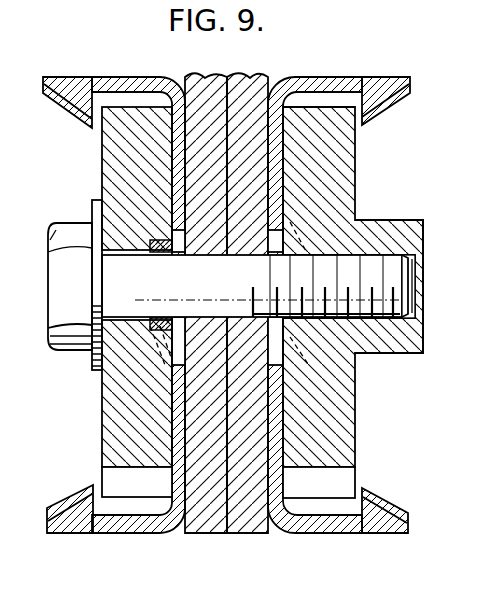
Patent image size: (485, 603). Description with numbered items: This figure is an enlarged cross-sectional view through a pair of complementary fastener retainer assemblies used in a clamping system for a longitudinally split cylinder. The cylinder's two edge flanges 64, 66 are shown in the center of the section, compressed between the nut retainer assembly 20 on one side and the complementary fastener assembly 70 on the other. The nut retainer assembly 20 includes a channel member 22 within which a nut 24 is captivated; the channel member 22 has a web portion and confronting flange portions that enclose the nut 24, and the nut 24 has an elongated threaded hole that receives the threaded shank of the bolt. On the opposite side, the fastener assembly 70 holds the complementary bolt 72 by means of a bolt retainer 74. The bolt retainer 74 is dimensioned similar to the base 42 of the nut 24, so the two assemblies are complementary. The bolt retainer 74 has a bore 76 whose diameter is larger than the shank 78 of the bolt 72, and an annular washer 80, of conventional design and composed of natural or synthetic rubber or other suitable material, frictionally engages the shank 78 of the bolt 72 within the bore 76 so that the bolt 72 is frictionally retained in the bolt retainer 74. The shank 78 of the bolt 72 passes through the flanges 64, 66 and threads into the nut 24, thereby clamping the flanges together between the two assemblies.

The nut retainer assembly 20 is at (386, 66).
The channel member 22 is at (136, 71).
The nut 24 is at (361, 172).
The base of nut 42 is at (326, 216).
The edge flange 64 is at (200, 84).
The edge flange 66 is at (262, 83).
The fastener assembly 70 is at (86, 72).
The bolt 72 is at (225, 309).
The bolt retainer 74 is at (100, 162).
The bore 76 is at (125, 247).
The shank 78 is at (218, 304).
The annular washer 80 is at (172, 317).